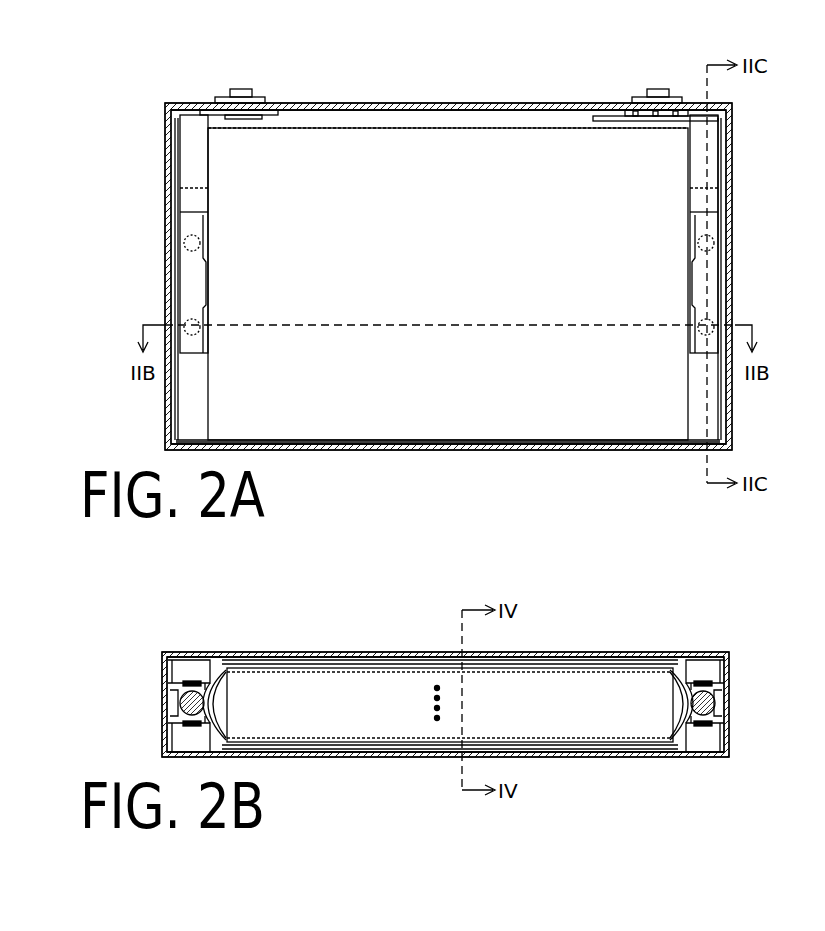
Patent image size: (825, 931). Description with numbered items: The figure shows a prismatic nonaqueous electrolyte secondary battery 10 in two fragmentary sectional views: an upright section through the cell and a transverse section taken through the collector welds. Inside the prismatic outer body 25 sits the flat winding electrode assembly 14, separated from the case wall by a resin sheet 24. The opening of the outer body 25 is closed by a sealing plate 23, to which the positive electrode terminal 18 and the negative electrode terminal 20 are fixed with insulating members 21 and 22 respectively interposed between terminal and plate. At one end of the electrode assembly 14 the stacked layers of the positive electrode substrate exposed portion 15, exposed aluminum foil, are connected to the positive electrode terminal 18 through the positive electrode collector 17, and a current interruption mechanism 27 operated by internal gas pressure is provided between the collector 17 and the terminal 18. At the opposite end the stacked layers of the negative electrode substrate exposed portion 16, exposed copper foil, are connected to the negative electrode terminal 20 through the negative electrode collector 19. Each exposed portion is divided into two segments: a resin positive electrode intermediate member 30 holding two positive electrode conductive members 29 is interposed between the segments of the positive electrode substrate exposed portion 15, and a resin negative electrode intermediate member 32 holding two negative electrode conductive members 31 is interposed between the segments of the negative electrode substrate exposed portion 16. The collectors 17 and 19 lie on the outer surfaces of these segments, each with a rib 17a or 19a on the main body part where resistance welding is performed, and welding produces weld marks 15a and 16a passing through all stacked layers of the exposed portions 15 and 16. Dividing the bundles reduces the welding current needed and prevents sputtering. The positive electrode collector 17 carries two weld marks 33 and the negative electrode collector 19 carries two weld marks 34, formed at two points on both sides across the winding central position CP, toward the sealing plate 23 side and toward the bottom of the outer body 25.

In FIG. 2A, the nonaqueous electrolyte secondary battery 10 is at (141, 41).
In FIG. 2A, the winding electrode assembly 14 is at (478, 393).
In FIG. 2B, the winding electrode assembly 14 is at (570, 680).
In FIG. 2A, the positive electrode substrate exposed portion 15 is at (715, 422).
In FIG. 2B, the positive electrode substrate exposed portion 15 is at (678, 685).
In FIG. 2B, the weld mark 15a is at (706, 681).
In FIG. 2A, the negative electrode substrate exposed portion 16 is at (188, 422).
In FIG. 2B, the negative electrode substrate exposed portion 16 is at (230, 670).
In FIG. 2B, the weld mark 16a is at (192, 681).
In FIG. 2A, the positive electrode collector 17 is at (712, 187).
In FIG. 2B, the positive electrode collector 17 is at (722, 665).
In FIG. 2A, the rib 17a is at (700, 243).
In FIG. 2B, the rib 17a is at (695, 680).
In FIG. 2A, the positive electrode terminal 18 is at (652, 90).
In FIG. 2A, the negative electrode collector 19 is at (185, 222).
In FIG. 2B, the negative electrode collector 19 is at (178, 665).
In FIG. 2A, the rib 19a is at (206, 225).
In FIG. 2B, the rib 19a is at (208, 680).
In FIG. 2A, the negative electrode terminal 20 is at (238, 96).
In FIG. 2A, the insulating member 21 is at (630, 97).
In FIG. 2A, the insulating member 22 is at (260, 97).
In FIG. 2A, the sealing plate 23 is at (484, 103).
In FIG. 2A, the resin sheet 24 is at (556, 444).
In FIG. 2B, the resin sheet 24 is at (380, 664).
In FIG. 2A, the prismatic outer body 25 is at (630, 450).
In FIG. 2B, the prismatic outer body 25 is at (333, 657).
In FIG. 2A, the current interruption mechanism 27 is at (645, 121).
In FIG. 2B, the positive electrode conductive member 29 is at (710, 695).
In FIG. 2B, the positive electrode intermediate member 30 is at (720, 703).
In FIG. 2B, the negative electrode conductive member 31 is at (188, 685).
In FIG. 2B, the negative electrode intermediate member 32 is at (180, 703).
In FIG. 2A, the weld mark 33 is at (700, 323).
In FIG. 2A, the weld mark 34 is at (200, 252).
In FIG. 2A, the winding central position CP is at (154, 294).